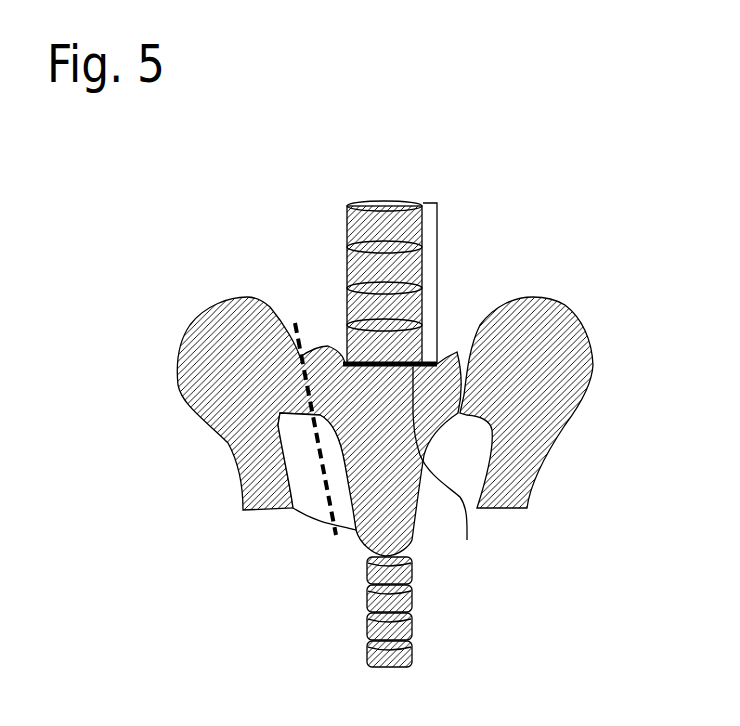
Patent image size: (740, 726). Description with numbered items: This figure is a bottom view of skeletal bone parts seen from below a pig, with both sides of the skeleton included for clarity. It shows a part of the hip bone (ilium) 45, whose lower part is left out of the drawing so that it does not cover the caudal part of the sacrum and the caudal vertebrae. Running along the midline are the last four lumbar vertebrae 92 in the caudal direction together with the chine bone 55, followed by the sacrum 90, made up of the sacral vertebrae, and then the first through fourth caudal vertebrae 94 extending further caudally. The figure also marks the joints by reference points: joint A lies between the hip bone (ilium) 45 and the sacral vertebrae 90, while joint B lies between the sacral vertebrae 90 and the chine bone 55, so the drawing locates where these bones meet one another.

The hip bone (ilium) 45 is at (242, 360).
The chine bone 55 is at (352, 333).
The lumbar vertebrae 92 is at (437, 283).
The sacrum (sacral vertebrae) 90 is at (380, 525).
The coccyx vertebrae 94 is at (352, 557).
The joint A is at (333, 523).
The joint B is at (447, 473).